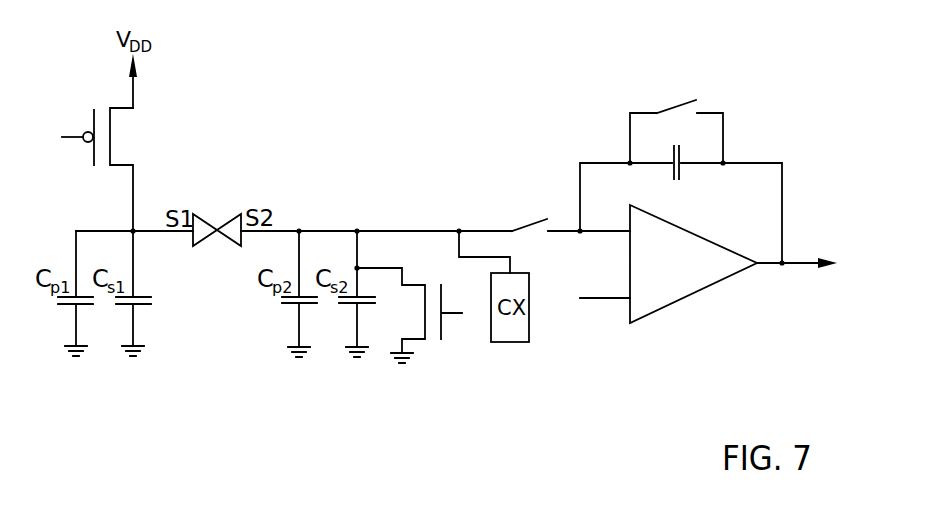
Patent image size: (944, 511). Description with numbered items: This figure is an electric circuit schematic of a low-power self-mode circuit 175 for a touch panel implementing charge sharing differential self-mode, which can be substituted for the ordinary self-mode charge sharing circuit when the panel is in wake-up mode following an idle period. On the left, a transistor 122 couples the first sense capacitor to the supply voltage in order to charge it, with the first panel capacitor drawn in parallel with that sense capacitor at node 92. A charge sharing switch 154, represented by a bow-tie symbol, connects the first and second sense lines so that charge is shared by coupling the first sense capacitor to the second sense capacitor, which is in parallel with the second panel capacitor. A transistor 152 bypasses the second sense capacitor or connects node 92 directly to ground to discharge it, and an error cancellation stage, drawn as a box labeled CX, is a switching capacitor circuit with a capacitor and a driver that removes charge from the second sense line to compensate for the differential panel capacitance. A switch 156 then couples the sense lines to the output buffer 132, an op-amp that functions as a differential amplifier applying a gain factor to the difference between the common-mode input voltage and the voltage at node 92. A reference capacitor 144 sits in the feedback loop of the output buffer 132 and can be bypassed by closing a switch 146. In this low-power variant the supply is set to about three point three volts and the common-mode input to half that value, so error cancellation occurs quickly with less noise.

The transistor 122 is at (123, 108).
The node 92 is at (137, 229).
The charge sharing switch 154 is at (222, 222).
The transistor 152 is at (417, 342).
The switch 156 is at (535, 222).
The low-power self-mode circuit 175 is at (708, 174).
The output buffer 132 is at (712, 285).
The reference capacitor 144 is at (686, 170).
The switch 146 is at (673, 103).